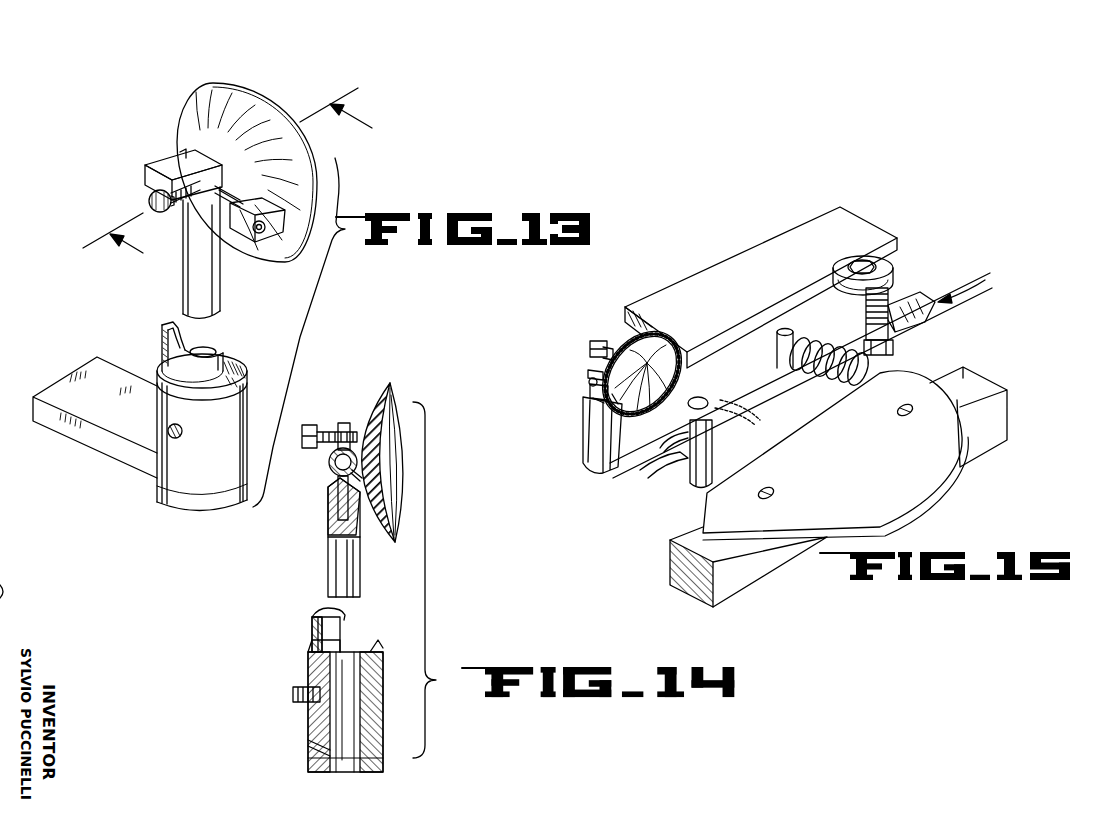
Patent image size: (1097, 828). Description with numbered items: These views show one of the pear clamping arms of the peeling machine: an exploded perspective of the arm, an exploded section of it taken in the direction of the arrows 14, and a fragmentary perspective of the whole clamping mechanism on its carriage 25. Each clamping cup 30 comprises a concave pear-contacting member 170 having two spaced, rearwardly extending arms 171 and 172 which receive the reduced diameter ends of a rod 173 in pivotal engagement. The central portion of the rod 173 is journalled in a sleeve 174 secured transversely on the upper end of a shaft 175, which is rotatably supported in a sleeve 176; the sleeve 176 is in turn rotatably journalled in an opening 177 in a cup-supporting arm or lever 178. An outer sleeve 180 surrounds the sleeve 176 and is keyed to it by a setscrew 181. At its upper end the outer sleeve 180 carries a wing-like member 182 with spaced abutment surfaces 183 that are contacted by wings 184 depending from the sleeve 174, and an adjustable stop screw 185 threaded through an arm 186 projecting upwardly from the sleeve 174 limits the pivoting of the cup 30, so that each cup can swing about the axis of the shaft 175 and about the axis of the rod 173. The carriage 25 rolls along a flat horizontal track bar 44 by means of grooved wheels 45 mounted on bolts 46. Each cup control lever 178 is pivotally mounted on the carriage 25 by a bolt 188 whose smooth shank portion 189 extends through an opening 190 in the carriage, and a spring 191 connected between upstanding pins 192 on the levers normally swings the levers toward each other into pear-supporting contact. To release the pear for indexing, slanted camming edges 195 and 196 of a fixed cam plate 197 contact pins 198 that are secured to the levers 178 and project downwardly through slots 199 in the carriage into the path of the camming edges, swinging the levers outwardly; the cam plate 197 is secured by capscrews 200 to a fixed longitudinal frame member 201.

In FIG. 13, the clamping cup 30 is at (245, 118).
In FIG. 14, the clamping cup 30 is at (382, 412).
In FIG. 15, the clamping cup 30 is at (628, 345).
In FIG. 13, the section arrows 14 is at (235, 184).
In FIG. 15, the carriage 25 is at (966, 279).
In FIG. 15, the flat horizontal bar 44 is at (761, 287).
In FIG. 15, the grooved wheel 45 is at (838, 266).
In FIG. 15, the bolt 46 is at (863, 262).
In FIG. 14, the concave pear-contacting member 170 is at (390, 458).
In FIG. 15, the concave pear-contacting member 170 is at (660, 358).
In FIG. 13, the arm 171 is at (162, 160).
In FIG. 14, the arm 171 is at (345, 476).
In FIG. 13, the arm 172 is at (262, 236).
In FIG. 15, the arm 172 is at (590, 370).
In FIG. 13, the rod 173 is at (268, 246).
In FIG. 14, the rod 173 is at (336, 468).
In FIG. 15, the rod 173 is at (589, 382).
In FIG. 13, the sleeve 174 is at (172, 186).
In FIG. 14, the sleeve 174 is at (330, 458).
In FIG. 13, the shaft 175 is at (200, 306).
In FIG. 14, the shaft 175 is at (338, 565).
In FIG. 13, the sleeve 176 is at (224, 362).
In FIG. 14, the sleeve 176 is at (322, 668).
In FIG. 13, the opening 177 is at (233, 378).
In FIG. 14, the opening 177 is at (320, 750).
In FIG. 13, the cup-supporting arm or lever 178 is at (118, 453).
In FIG. 14, the cup-supporting arm or lever 178 is at (322, 762).
In FIG. 15, the cup-supporting arm or lever 178 is at (745, 396).
In FIG. 13, the outer sleeve 180 is at (188, 468).
In FIG. 14, the outer sleeve 180 is at (320, 716).
In FIG. 15, the outer sleeve 180 is at (600, 423).
In FIG. 13, the setscrew 181 is at (168, 428).
In FIG. 14, the setscrew 181 is at (296, 692).
In FIG. 13, the wing-like member 182 is at (182, 362).
In FIG. 14, the wing-like member 182 is at (320, 638).
In FIG. 15, the wing-like member 182 is at (590, 390).
In FIG. 13, the abutment surface 183 is at (176, 326).
In FIG. 14, the abutment surface 183 is at (318, 611).
In FIG. 13, the wing 184 is at (218, 235).
In FIG. 14, the wing 184 is at (338, 498).
In FIG. 15, the wing 184 is at (595, 401).
In FIG. 13, the adjustable stop screw 185 is at (151, 200).
In FIG. 14, the adjustable stop screw 185 is at (318, 410).
In FIG. 15, the adjustable stop screw 185 is at (592, 343).
In FIG. 13, the arm 186 is at (185, 151).
In FIG. 14, the arm 186 is at (343, 422).
In FIG. 15, the arm 186 is at (603, 352).
In FIG. 15, the bolt 188 is at (890, 298).
In FIG. 15, the smooth shank portion 189 is at (895, 346).
In FIG. 15, the opening 190 is at (912, 324).
In FIG. 15, the spring 191 is at (828, 388).
In FIG. 15, the upstanding pin 192 is at (779, 333).
In FIG. 15, the slanted camming edge 195 is at (712, 484).
In FIG. 15, the slanted camming edge 196 is at (740, 537).
In FIG. 15, the cam plate 197 is at (846, 471).
In FIG. 15, the pin 198 is at (680, 478).
In FIG. 15, the slot 199 is at (660, 468).
In FIG. 15, the capscrew 200 is at (898, 412).
In FIG. 15, the longitudinal frame member 201 is at (990, 416).